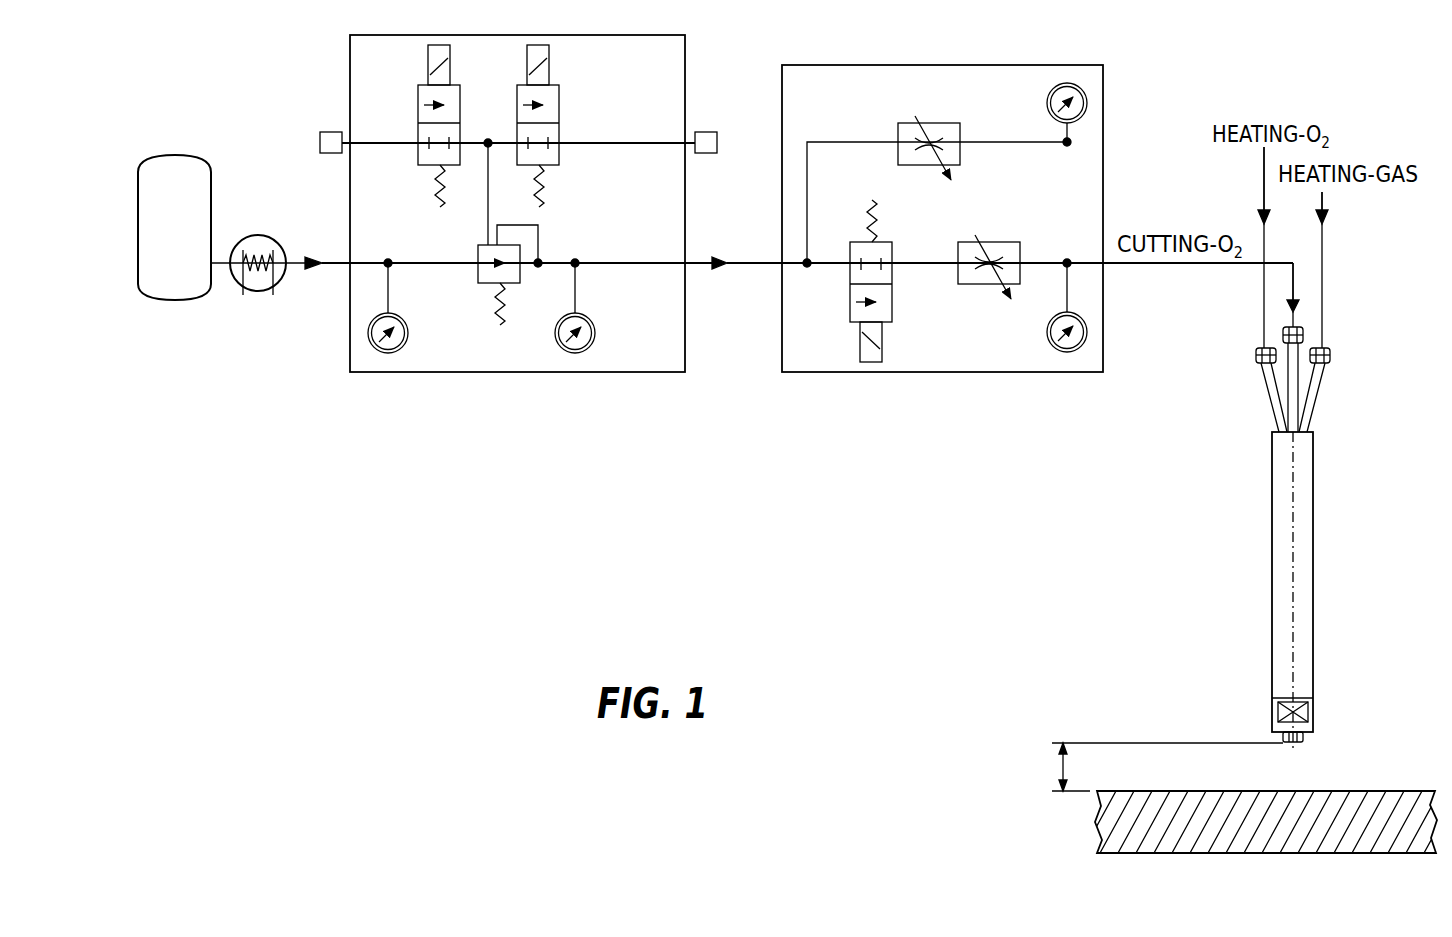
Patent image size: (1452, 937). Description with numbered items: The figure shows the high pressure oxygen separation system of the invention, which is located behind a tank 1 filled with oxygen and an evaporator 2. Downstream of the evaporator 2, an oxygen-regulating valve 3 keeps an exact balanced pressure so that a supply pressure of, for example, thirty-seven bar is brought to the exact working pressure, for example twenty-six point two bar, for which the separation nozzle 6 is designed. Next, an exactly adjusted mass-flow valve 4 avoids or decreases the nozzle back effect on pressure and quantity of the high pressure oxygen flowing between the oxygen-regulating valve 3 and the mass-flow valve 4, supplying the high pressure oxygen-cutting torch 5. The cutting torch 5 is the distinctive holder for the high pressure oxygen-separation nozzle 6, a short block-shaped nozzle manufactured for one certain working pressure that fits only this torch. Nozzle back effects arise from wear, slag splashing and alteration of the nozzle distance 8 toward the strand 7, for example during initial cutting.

The tank 1 is at (175, 300).
The evaporator 2 is at (283, 275).
The oxygen-regulating valve 3 is at (475, 372).
The mass-flow valve 4 is at (935, 372).
The high pressure oxygen-cutting torch 5 is at (1307, 558).
The high pressure oxygen-separation nozzle 6 is at (1305, 738).
The strand 7 is at (1390, 791).
The nozzle distance 8 is at (1060, 769).